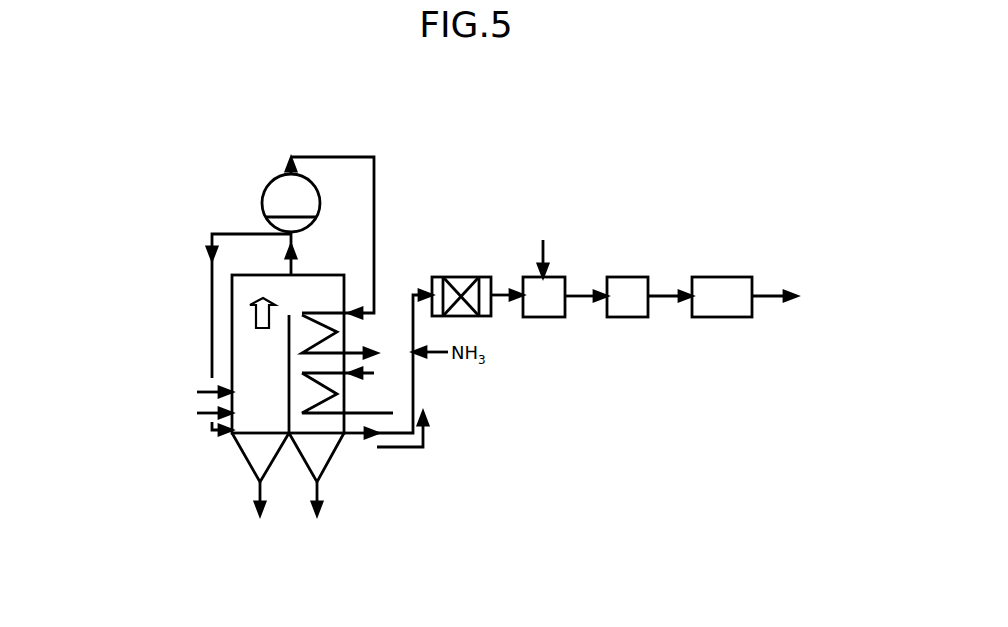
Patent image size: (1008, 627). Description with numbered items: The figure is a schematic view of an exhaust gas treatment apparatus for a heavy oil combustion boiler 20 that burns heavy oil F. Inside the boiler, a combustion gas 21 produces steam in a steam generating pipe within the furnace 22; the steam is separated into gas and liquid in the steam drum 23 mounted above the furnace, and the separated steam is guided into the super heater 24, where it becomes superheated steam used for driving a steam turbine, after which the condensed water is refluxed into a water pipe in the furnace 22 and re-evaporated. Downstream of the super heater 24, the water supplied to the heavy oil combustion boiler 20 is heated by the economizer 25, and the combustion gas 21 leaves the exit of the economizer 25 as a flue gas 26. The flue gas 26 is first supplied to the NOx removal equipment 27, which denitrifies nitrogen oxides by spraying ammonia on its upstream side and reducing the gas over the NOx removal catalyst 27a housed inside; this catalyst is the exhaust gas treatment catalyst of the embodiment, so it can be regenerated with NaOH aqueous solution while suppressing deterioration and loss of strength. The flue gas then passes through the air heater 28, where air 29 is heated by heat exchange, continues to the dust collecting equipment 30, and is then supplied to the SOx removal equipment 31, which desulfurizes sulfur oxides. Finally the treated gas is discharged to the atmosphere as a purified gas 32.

The heavy oil combustion boiler 20 is at (210, 436).
The combustion gas 21 is at (256, 312).
The furnace 22 is at (218, 354).
The steam drum 23 is at (273, 181).
The super heater 24 is at (319, 290).
The economizer 25 is at (317, 436).
The flue gas 26 is at (405, 447).
The NOx removal equipment 27 is at (555, 251).
The NOx removal catalyst 27a is at (462, 277).
The air heater 28 is at (538, 317).
The air 29 is at (545, 250).
The dust collecting equipment 30 is at (623, 317).
The SOx removal equipment 31 is at (715, 317).
The purified gas 32 is at (767, 290).